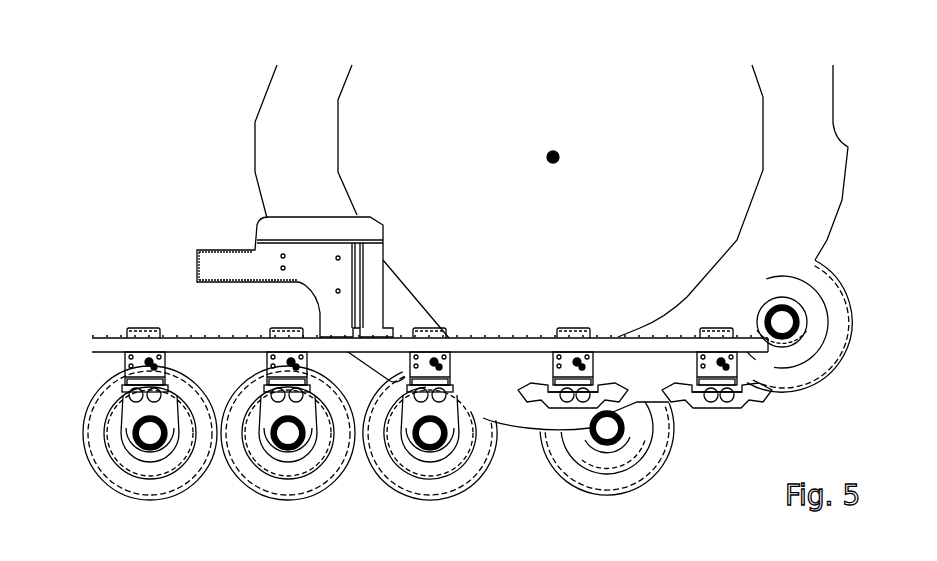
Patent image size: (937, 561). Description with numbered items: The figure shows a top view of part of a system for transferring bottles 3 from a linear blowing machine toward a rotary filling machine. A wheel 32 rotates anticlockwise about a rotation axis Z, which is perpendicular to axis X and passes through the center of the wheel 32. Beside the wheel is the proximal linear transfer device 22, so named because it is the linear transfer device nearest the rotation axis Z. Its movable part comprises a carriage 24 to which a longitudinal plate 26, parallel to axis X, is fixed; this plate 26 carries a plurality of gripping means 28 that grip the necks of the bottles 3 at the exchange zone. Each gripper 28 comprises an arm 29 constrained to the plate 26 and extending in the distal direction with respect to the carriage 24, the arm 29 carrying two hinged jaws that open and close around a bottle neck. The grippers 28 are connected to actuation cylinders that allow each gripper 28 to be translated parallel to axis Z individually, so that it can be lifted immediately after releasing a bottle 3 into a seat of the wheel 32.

The proximal linear transfer device 22 is at (148, 243).
The carriage 24 is at (233, 257).
The longitudinal plate 26 is at (108, 345).
The gripping means 28 is at (115, 363).
The arm 29 is at (138, 378).
The bottle 3 is at (822, 305).
The wheel 32 is at (817, 123).
The rotation axis Z is at (553, 157).